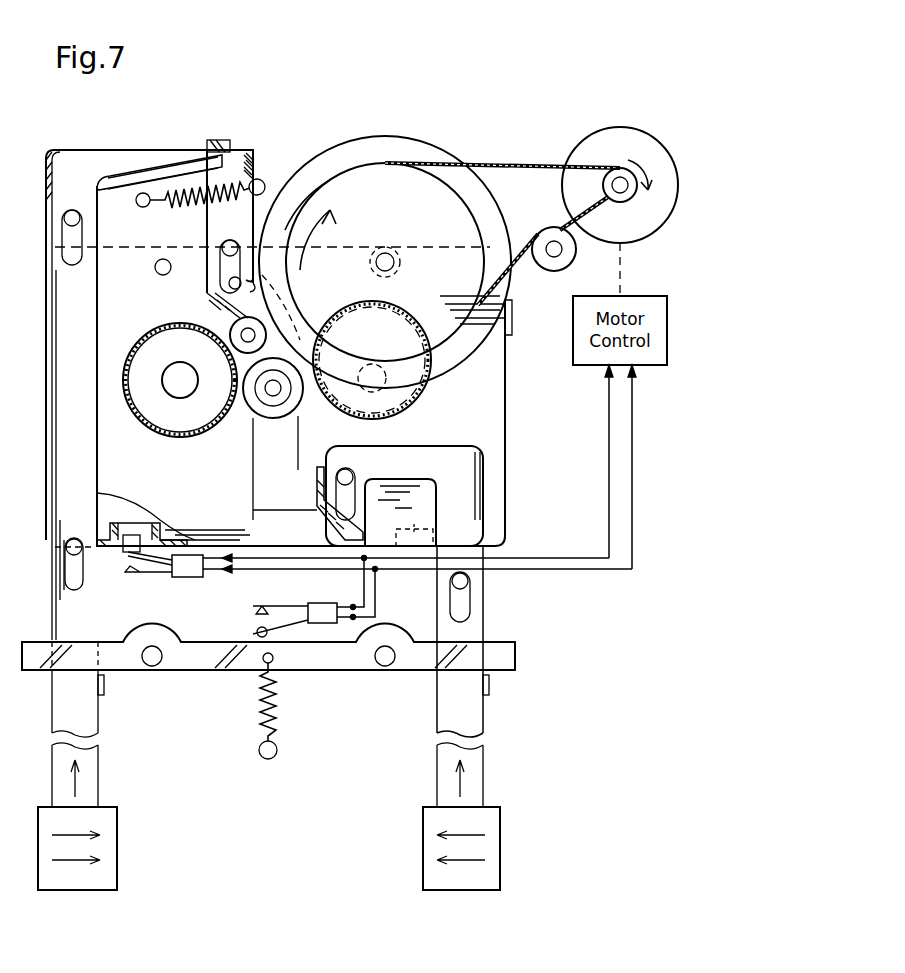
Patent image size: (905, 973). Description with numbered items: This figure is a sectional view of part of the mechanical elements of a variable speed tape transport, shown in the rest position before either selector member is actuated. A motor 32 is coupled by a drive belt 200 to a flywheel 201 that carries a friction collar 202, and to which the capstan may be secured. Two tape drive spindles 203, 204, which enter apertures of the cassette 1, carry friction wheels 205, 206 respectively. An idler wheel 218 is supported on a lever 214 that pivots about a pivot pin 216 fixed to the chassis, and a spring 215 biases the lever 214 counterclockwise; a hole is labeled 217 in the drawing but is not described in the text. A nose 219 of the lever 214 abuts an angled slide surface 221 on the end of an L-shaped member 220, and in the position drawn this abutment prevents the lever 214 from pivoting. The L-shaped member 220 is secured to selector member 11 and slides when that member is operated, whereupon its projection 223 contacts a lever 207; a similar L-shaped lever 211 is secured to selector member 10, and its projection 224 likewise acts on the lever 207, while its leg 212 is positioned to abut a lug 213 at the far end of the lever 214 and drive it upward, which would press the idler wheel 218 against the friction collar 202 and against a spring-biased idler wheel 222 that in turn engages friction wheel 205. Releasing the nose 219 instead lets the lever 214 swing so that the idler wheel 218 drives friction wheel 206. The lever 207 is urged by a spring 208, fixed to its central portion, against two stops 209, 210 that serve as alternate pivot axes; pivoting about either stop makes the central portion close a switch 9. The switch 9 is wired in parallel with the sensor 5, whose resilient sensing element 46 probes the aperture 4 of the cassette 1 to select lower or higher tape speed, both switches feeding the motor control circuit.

The cassette 1 is at (492, 438).
The aperture 4 is at (153, 523).
The sensor 5 is at (180, 578).
The switch 9 is at (318, 603).
The selector member 10 is at (115, 875).
The selector member 11 is at (425, 873).
The motor 32 is at (604, 140).
The sensing element 46 is at (125, 555).
The drive belt 200 is at (500, 165).
The flywheel 201 is at (360, 175).
The friction collar 202 is at (420, 150).
The tape drive spindle 203 is at (170, 388).
The tape drive spindle 204 is at (370, 372).
The friction wheel 205 is at (165, 440).
The friction wheel 206 is at (415, 428).
The lever 207 is at (310, 670).
The spring 208 is at (278, 735).
The stop 209 is at (152, 666).
The stop 210 is at (383, 666).
The L-shaped lever 211 is at (88, 449).
The leg 212 is at (178, 158).
The lug 213 is at (222, 140).
The lever 214 is at (238, 166).
The spring 215 is at (185, 212).
The pivot pin 216 is at (232, 270).
The roller lever 217 is at (190, 275).
The idler wheel 218 is at (250, 412).
The nose 219 is at (318, 512).
The L-shaped member 220 is at (486, 610).
The angled slide surface 221 is at (312, 482).
The idler wheel 222 is at (303, 275).
The projection 223 is at (492, 687).
The projection 224 is at (106, 690).